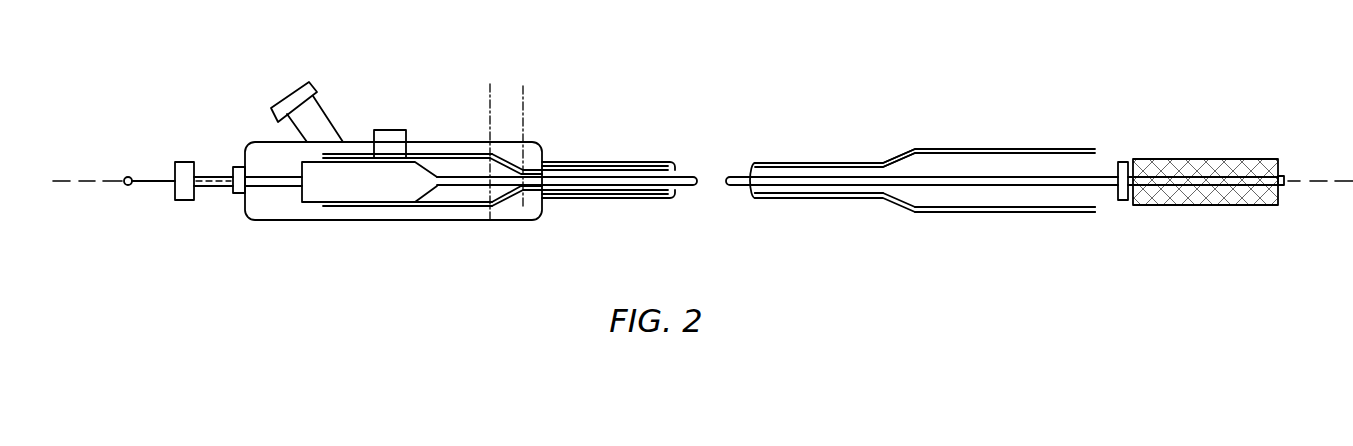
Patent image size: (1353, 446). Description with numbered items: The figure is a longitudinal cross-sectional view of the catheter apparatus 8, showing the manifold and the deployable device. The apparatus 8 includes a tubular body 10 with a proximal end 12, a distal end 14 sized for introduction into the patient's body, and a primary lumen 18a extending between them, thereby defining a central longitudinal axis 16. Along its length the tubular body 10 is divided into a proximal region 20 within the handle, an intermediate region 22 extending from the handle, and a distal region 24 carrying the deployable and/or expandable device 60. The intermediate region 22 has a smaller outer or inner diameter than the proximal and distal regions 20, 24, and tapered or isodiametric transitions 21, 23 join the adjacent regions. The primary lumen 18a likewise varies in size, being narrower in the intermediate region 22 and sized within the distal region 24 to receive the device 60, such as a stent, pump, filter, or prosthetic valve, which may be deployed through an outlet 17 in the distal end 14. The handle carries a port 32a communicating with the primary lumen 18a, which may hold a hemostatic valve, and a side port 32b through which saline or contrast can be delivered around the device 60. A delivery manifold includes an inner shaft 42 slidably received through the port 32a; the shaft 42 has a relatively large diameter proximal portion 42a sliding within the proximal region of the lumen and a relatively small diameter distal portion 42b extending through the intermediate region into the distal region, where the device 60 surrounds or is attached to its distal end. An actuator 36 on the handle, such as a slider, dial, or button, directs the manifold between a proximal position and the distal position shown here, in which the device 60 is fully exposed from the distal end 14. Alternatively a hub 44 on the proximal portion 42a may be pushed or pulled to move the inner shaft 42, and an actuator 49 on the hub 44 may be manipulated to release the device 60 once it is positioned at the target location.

The apparatus 8 is at (1005, 156).
The tubular body 10 is at (817, 143).
The proximal end 12 is at (338, 203).
The distal end 14 is at (1062, 213).
The central longitudinal axis 16 is at (88, 182).
The outlet 17 is at (1095, 163).
The primary lumen 18a is at (812, 192).
The proximal region 20 is at (462, 84).
The transition 21 is at (508, 200).
The intermediate region 22 is at (553, 86).
The transition 23 is at (902, 155).
The distal region 24 is at (919, 218).
The port 32a is at (235, 196).
The side port 32b is at (302, 82).
The actuator 36 is at (385, 128).
The inner shaft 42 is at (683, 172).
The proximal portion 42a is at (418, 200).
The distal portion 42b is at (670, 197).
The hub 44 is at (185, 200).
The actuator 49 is at (125, 187).
The deployable and/or expandable device 60 is at (1188, 157).